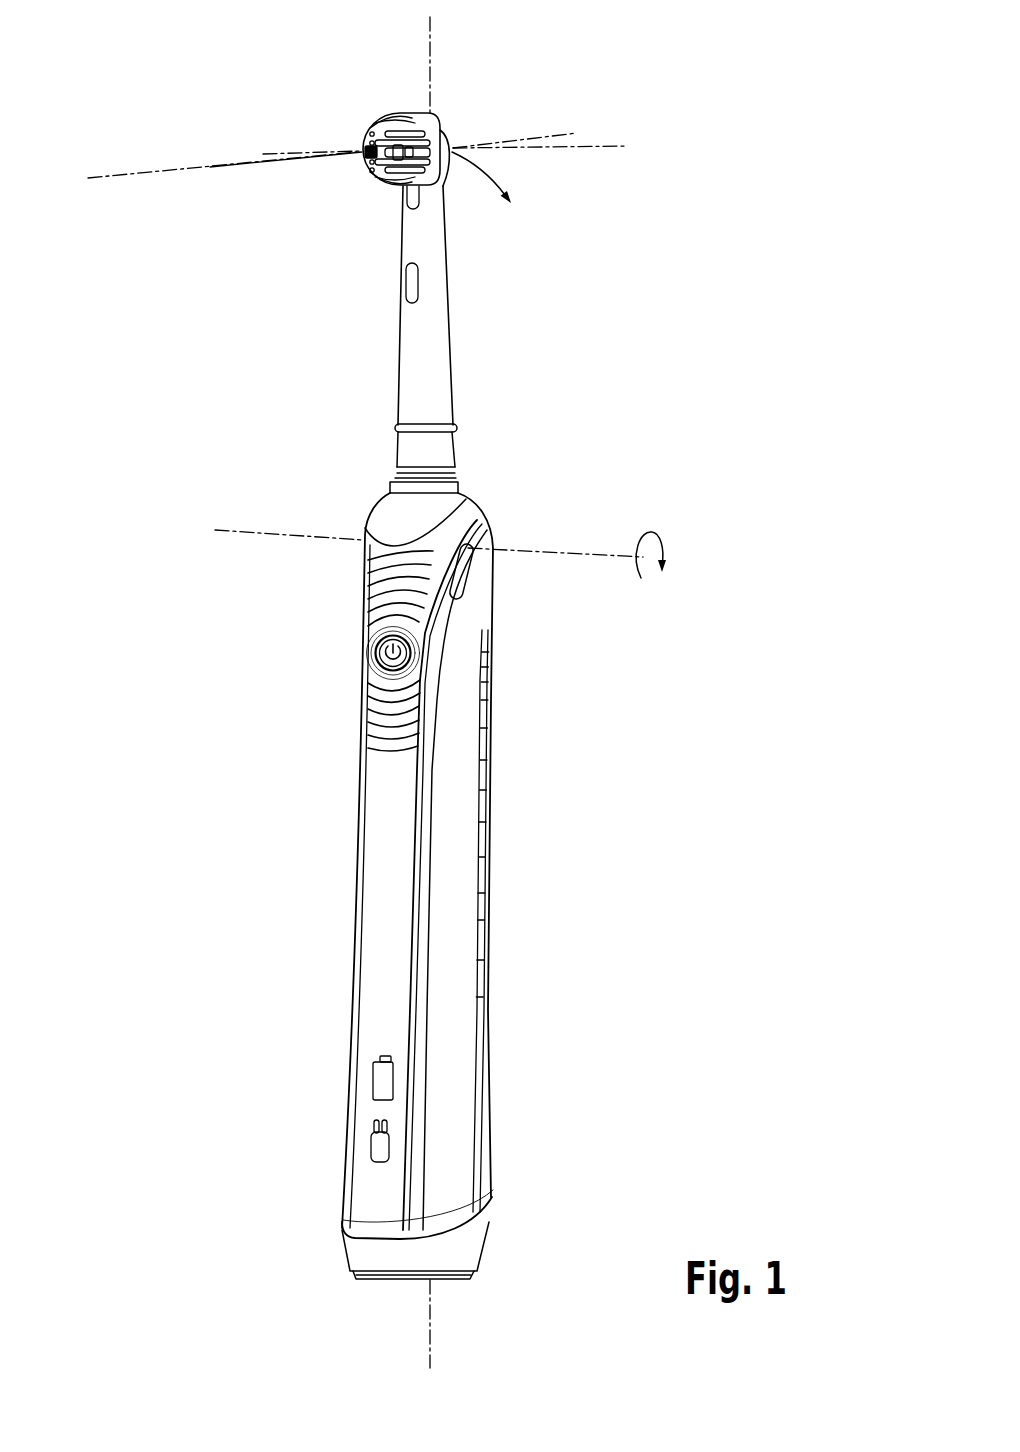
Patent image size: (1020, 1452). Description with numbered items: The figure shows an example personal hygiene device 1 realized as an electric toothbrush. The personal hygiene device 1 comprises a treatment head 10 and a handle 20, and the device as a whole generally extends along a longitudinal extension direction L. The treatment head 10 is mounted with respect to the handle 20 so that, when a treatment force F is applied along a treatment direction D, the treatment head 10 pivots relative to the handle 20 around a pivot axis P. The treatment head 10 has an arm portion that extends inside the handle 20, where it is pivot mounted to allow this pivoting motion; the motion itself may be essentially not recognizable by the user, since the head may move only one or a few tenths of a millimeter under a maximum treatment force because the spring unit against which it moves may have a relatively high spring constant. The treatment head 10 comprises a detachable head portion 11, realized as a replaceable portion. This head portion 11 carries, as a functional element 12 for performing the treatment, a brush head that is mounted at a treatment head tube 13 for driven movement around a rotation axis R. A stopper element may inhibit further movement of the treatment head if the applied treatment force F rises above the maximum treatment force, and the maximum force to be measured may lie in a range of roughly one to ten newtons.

The personal hygiene device 1 is at (315, 788).
The treatment head 10 is at (470, 264).
The head portion 11 is at (470, 383).
The functional element 12 is at (372, 107).
The treatment head tube 13 is at (402, 335).
The handle 20 is at (462, 985).
The longitudinal extension direction L is at (430, 42).
The treatment direction D is at (133, 173).
The rotation axis R is at (300, 153).
The treatment force F is at (233, 167).
The pivot axis P is at (260, 530).